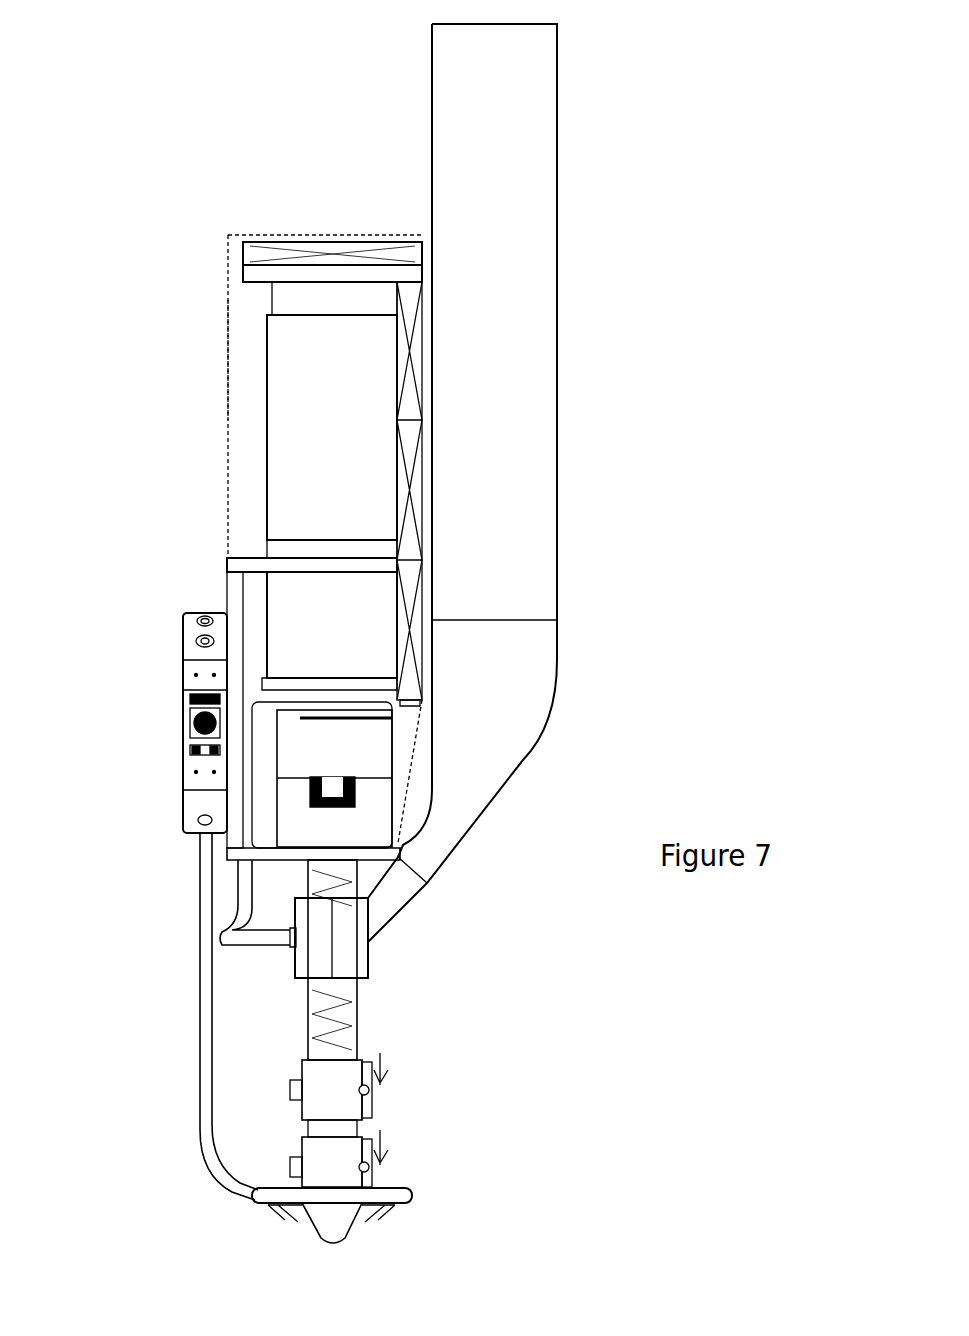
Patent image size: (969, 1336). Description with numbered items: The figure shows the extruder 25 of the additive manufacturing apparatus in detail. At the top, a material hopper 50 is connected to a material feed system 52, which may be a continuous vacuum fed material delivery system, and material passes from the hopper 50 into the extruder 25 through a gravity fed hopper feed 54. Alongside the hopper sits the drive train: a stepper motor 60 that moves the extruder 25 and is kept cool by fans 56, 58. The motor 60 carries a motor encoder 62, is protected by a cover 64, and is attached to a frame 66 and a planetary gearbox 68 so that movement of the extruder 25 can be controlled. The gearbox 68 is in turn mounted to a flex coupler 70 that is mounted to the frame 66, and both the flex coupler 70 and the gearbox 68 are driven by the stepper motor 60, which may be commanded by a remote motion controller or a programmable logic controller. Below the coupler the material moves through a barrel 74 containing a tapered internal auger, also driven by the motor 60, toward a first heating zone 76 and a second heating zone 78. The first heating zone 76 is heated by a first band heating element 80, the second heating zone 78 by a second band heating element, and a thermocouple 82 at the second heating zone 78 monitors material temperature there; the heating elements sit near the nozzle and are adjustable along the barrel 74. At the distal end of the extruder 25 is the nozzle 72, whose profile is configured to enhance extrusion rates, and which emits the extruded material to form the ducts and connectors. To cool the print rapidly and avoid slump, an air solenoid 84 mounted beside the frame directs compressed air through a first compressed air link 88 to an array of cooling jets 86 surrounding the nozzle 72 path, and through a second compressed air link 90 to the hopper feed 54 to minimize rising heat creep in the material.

The extruder 25 is at (281, 166).
The material hopper 50 is at (500, 713).
The material feed system 52 is at (486, 40).
The hopper feed 54 is at (370, 942).
The fan 56 is at (290, 248).
The fan 58 is at (453, 468).
The stepper motor 60 is at (300, 438).
The motor encoder 62 is at (292, 296).
The cover 64 is at (228, 357).
The frame 66 is at (303, 565).
The planetary gearbox 68 is at (333, 605).
The flex coupler 70 is at (330, 772).
The nozzle 72 is at (331, 1233).
The barrel 74 is at (328, 998).
The first heating zone 76 is at (320, 1091).
The second heating zone 78 is at (320, 1167).
The first band heating element 80 is at (372, 1068).
The thermocouple 82 is at (372, 1158).
The air solenoid 84 is at (203, 668).
The cooling jets 86 is at (395, 1210).
The first compressed air link 88 is at (205, 860).
The second compressed air link 90 is at (243, 920).